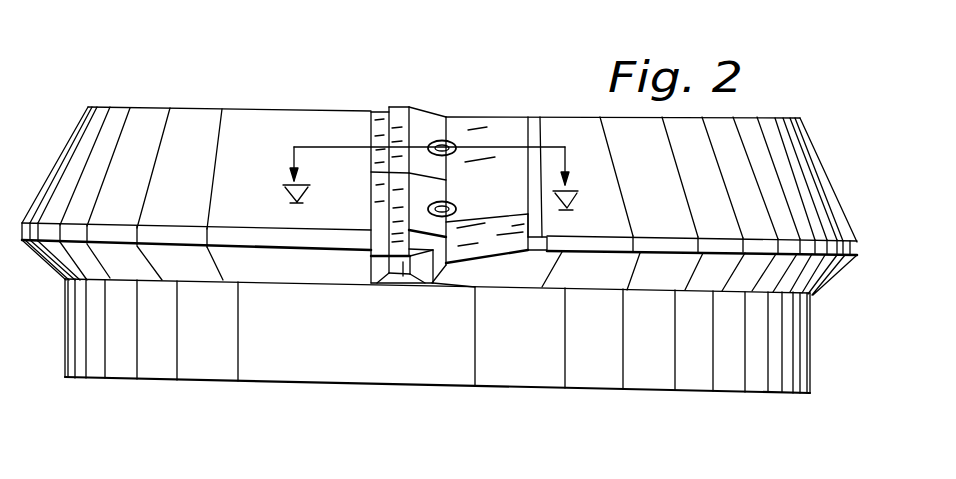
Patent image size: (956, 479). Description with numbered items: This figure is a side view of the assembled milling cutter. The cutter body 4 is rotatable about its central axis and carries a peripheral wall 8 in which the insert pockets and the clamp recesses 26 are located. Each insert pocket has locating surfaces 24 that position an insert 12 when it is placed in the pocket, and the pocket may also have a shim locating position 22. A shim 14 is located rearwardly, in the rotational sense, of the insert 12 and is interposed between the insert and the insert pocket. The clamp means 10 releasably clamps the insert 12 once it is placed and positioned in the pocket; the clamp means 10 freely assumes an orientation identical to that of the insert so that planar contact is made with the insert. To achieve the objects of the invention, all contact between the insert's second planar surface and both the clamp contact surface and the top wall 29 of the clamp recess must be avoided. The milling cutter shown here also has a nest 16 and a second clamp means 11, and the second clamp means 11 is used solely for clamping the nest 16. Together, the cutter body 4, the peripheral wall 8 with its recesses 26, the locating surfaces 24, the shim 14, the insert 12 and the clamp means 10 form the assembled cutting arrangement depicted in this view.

The cutter body 4 is at (117, 107).
The peripheral wall 8 is at (137, 183).
The clamp means 10 is at (423, 109).
The second clamp means 11 is at (447, 222).
The insert 12 is at (397, 107).
The shim 14 is at (378, 113).
The nest 16 is at (398, 213).
The shim locating position 22 is at (382, 265).
The locating surfaces 24 is at (402, 275).
The clamp recesses 26 is at (433, 268).
The top wall of the clamp recess 29 is at (447, 268).